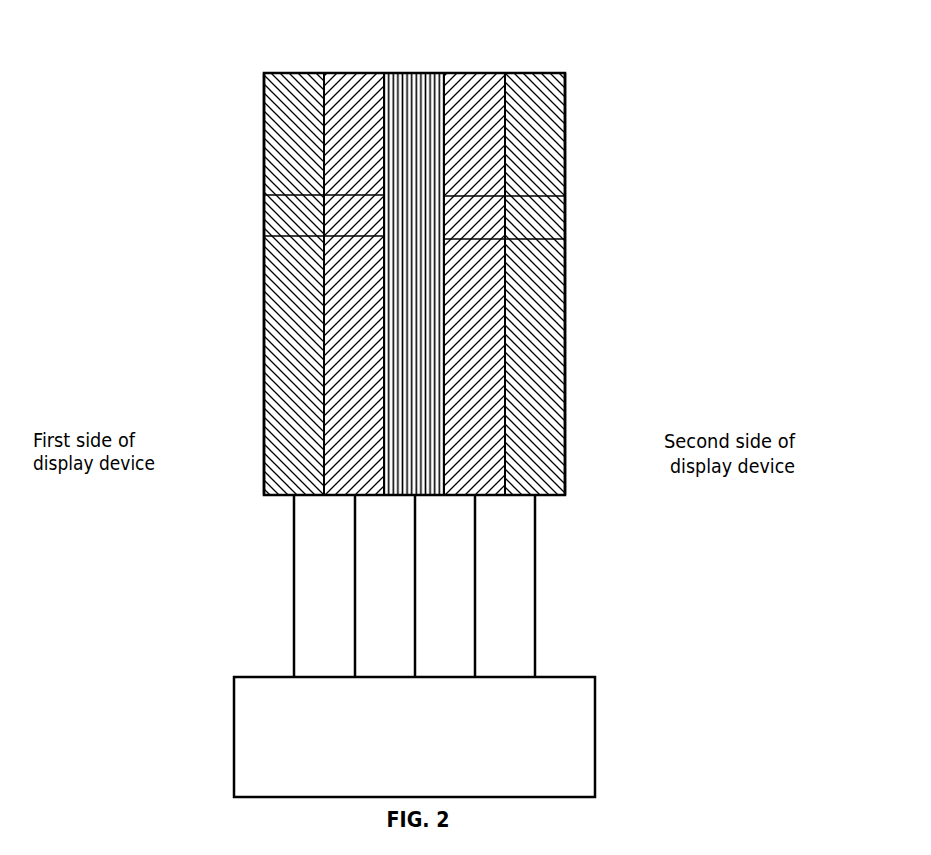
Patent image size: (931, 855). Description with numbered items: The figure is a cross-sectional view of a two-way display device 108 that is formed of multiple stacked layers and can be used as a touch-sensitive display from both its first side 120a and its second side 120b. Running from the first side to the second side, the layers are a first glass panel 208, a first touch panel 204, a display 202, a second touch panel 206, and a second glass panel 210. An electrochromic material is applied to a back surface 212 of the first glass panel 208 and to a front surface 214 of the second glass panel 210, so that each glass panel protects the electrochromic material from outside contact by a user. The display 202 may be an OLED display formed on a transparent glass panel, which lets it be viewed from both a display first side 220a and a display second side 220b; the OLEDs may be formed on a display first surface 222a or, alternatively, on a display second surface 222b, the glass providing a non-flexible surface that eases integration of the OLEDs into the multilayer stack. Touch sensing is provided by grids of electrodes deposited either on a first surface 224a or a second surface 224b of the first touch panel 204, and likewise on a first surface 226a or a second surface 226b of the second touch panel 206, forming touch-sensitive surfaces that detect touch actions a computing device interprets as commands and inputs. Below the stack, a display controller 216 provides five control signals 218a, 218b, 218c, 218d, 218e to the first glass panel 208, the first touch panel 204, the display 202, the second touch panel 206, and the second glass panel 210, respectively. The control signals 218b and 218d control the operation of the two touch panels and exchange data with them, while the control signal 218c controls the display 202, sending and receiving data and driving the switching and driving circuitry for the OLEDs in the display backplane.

The two-way display device 108 is at (149, 43).
The display 202 is at (417, 73).
The first touch panel 204 is at (352, 73).
The second touch panel 206 is at (479, 73).
The first glass panel 208 is at (292, 73).
The second glass panel 210 is at (537, 73).
The back surface of the first glass panel 212 is at (324, 126).
The front surface of the second glass panel 214 is at (505, 125).
The display controller 216 is at (576, 787).
The control signal 218a is at (294, 655).
The control signal 218b is at (355, 620).
The control signal 218c is at (415, 565).
The control signal 218d is at (475, 619).
The control signal 218e is at (535, 655).
The first side 120a is at (246, 473).
The second side 120b is at (579, 475).
The display first side 220a is at (378, 345).
The display second side 220b is at (450, 350).
The display first surface 222a is at (386, 203).
The display second surface 222b is at (442, 204).
The first surface of the first touch panel 224a is at (325, 281).
The second surface of the first touch panel 224b is at (264, 236).
The first surface of the second touch panel 226a is at (565, 239).
The second surface of the second touch panel 226b is at (504, 282).